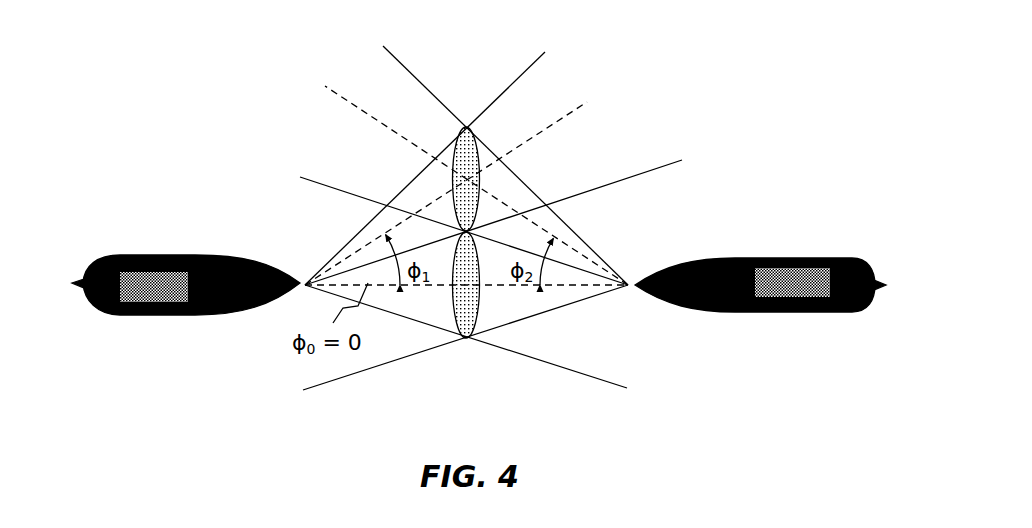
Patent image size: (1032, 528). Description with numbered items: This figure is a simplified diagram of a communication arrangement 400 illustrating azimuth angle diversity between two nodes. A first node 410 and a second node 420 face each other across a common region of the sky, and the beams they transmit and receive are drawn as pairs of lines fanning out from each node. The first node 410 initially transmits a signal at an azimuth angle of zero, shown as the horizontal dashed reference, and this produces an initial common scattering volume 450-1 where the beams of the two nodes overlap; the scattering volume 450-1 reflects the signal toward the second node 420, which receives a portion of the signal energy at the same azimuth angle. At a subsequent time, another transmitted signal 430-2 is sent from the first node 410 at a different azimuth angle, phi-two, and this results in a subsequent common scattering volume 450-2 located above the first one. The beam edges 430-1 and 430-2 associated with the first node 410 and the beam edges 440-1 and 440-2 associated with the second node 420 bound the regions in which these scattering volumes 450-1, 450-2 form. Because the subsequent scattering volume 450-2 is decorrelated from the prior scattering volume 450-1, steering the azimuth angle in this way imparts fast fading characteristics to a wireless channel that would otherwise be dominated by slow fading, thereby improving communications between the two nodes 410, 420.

The system 400 is at (754, 56).
The first node 410 is at (760, 262).
The second node 420 is at (186, 310).
The first beam edge of first vehicle 430-1 is at (465, 355).
The transmitted signal 430-2 is at (505, 153).
The first beam edge of second vehicle 440-1 is at (471, 359).
The second beam edge of second vehicle 440-2 is at (498, 222).
The initial common scattering volume 450-1 is at (485, 313).
The subsequent common scattering volume 450-2 is at (512, 162).